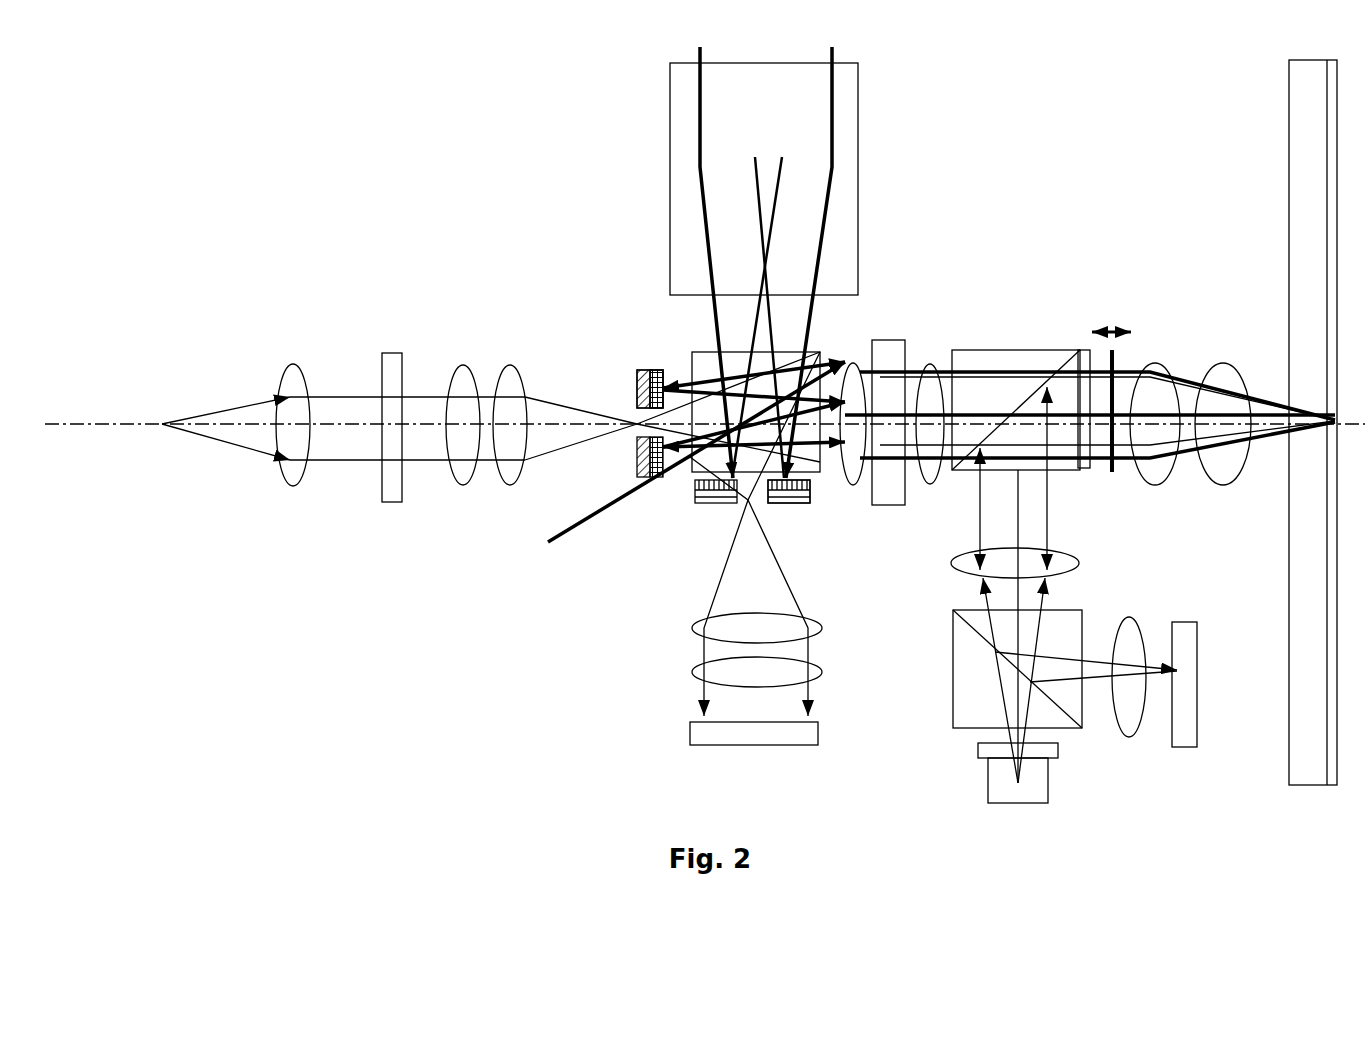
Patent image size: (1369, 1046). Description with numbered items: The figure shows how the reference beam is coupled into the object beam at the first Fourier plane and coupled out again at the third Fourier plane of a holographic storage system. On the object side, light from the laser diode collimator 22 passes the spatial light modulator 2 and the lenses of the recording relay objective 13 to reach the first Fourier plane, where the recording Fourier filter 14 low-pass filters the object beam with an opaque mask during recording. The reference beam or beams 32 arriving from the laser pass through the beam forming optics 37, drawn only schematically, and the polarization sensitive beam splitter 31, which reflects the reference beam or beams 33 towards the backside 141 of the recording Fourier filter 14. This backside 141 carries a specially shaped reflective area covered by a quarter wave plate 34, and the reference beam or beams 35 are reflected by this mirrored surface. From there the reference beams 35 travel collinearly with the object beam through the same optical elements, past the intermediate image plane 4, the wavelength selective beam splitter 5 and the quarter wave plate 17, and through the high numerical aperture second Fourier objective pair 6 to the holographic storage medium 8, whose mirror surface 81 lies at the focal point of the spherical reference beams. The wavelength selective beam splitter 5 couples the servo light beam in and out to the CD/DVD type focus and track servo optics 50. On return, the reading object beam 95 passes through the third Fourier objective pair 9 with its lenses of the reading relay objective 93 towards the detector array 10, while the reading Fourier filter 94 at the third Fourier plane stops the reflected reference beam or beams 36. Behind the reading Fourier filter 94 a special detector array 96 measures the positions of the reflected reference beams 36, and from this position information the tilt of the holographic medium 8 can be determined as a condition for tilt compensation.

The spatial light modulator 2 is at (385, 488).
The laser diode collimator 22 is at (296, 383).
The lenses of the recording relay objective 13 is at (497, 368).
The recording Fourier filter 14 is at (632, 383).
The backside of the recording Fourier filter 141 is at (645, 371).
The quarter wave plate 34 is at (640, 352).
The reference beam reflected by the polarization sensitive beam splitter 33 is at (703, 388).
The beam forming optics 37 is at (687, 180).
The reference beam 32 is at (770, 133).
The polarization sensitive beam splitter 31 is at (680, 463).
The reflected reference beam 35 is at (853, 362).
The quarter wave plate 17 is at (1075, 352).
The intermediate image plane 4 is at (1112, 320).
The second Fourier objective pair 6 is at (1253, 353).
The holographic storage medium 8 is at (1287, 422).
The mirror surface 81 is at (1322, 97).
The wavelength selective beam splitter 5 is at (1005, 428).
The reading Fourier filter 94 is at (690, 492).
The detector array 96 is at (721, 508).
The reflected reference beam 36 is at (813, 480).
The reading object beam 95 is at (757, 595).
The lenses of the reading relay objective 93 is at (668, 595).
The detector array 10 is at (694, 761).
The third Fourier objective pair 9 is at (755, 720).
The servo optics 50 is at (952, 807).